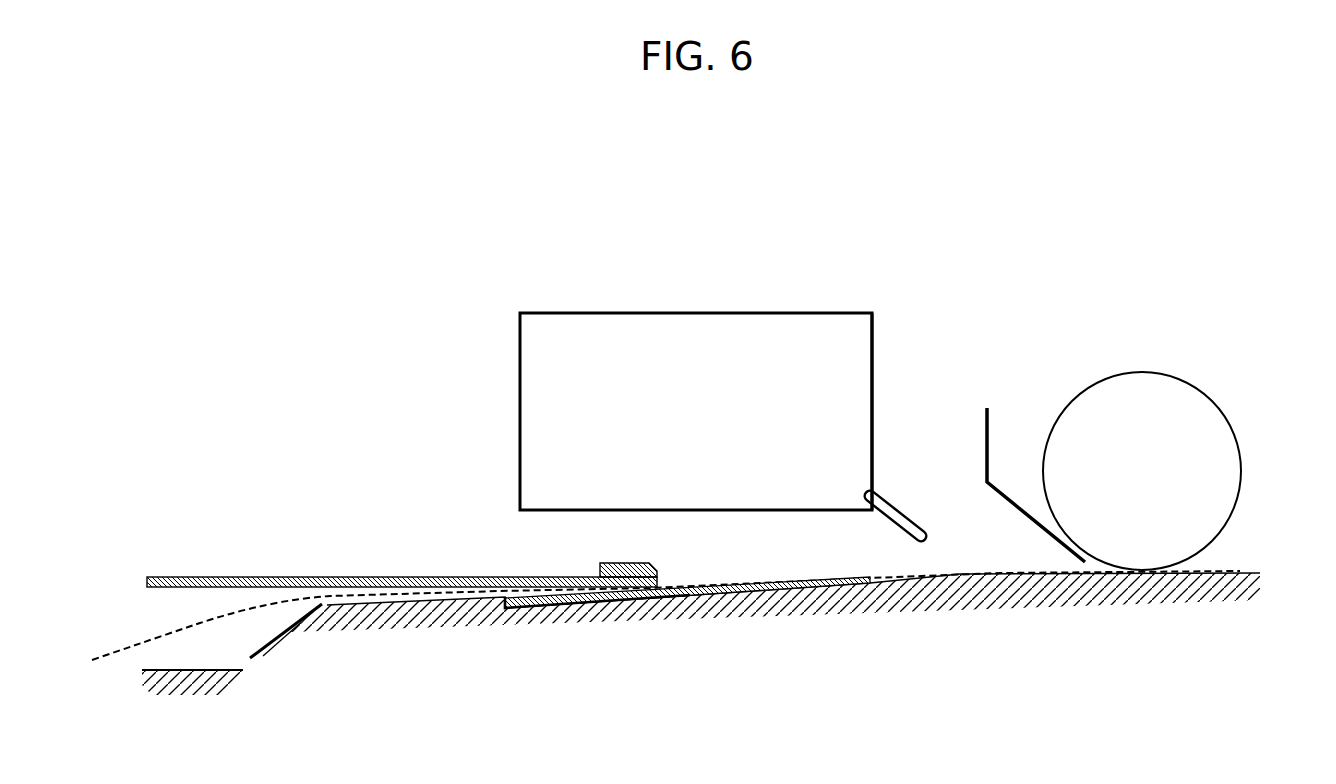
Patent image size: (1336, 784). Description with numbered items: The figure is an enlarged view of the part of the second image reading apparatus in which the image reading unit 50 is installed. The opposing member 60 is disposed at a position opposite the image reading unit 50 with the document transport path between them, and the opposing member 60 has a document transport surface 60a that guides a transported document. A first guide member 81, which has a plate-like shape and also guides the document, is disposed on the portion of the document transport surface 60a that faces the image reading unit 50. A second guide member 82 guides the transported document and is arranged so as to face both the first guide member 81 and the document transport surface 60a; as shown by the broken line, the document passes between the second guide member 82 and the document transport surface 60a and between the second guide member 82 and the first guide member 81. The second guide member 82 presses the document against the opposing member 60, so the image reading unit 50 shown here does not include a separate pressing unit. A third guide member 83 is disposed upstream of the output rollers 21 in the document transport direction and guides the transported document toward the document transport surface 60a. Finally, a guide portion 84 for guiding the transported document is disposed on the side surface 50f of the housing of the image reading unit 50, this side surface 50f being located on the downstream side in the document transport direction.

The output rollers 21 is at (1223, 404).
The image reading unit 50 is at (780, 296).
The side surface 50f is at (874, 327).
The opposing member 60 is at (1244, 570).
The document transport surface 60a is at (205, 670).
The first guide member 81 is at (680, 592).
The second guide member 82 is at (315, 577).
The third guide member 83 is at (989, 427).
The guide portion 84 is at (905, 502).